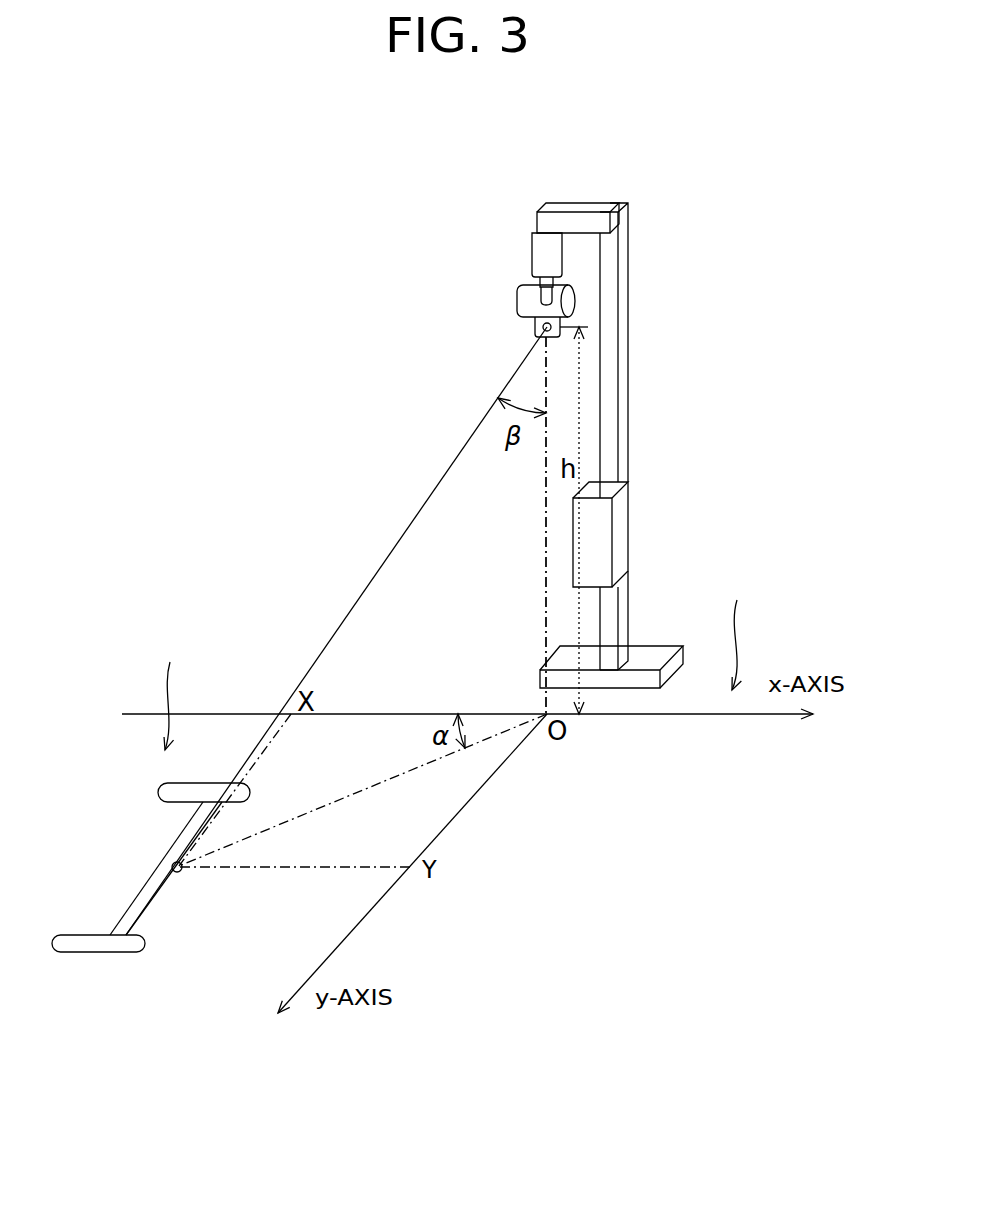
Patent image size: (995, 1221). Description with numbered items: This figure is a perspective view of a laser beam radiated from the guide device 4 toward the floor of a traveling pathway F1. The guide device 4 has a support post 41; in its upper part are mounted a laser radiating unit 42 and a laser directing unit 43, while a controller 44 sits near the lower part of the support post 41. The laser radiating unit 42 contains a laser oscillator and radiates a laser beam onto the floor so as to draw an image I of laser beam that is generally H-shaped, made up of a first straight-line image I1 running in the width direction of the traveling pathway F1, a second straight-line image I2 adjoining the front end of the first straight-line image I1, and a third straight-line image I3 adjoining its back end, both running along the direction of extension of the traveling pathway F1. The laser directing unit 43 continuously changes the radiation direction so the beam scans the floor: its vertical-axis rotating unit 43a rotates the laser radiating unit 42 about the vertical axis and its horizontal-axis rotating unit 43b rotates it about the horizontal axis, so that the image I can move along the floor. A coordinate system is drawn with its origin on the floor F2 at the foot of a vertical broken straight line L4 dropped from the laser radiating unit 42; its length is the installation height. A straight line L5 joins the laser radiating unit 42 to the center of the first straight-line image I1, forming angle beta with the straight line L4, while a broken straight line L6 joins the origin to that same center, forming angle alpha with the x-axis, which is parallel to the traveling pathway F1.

The guide device 4 is at (630, 278).
The support post 41 is at (608, 380).
The laser radiating unit 42 is at (535, 325).
The laser directing unit 43 is at (421, 224).
The vertical-axis rotating unit 43a is at (543, 256).
The horizontal-axis rotating unit 43b is at (527, 297).
The controller 44 is at (620, 536).
The image of laser beam I is at (168, 842).
The first straight-line image I1 is at (150, 890).
The second straight-line image I2 is at (85, 955).
The third straight-line image I3 is at (181, 790).
The straight line L4 is at (546, 527).
The straight line L5 is at (410, 520).
The straight line L6 is at (345, 800).
The traveling pathway F1 is at (173, 689).
The floor F2 is at (742, 628).